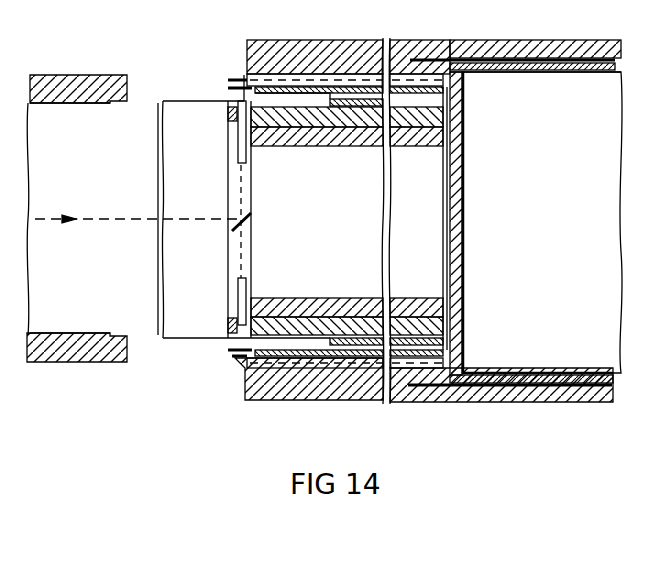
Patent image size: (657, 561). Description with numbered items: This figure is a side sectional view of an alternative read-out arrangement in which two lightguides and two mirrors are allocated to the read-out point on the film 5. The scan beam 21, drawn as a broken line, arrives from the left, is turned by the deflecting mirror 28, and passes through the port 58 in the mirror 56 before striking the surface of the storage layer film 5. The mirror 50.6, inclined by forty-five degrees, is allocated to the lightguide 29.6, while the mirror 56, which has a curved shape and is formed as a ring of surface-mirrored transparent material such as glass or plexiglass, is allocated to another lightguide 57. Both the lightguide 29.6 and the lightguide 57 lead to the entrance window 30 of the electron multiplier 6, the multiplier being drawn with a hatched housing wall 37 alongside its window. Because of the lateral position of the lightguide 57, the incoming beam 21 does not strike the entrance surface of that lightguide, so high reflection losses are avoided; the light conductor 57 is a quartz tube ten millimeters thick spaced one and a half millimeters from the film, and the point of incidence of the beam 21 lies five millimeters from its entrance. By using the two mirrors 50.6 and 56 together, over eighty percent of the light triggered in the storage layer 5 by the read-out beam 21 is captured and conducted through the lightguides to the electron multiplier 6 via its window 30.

The film 5 is at (215, 100).
The electron multiplier 6 is at (478, 270).
The beam 21 is at (100, 219).
The deflecting mirror 28 is at (252, 220).
The lightguide 29.6 is at (290, 78).
The entrance window 30 is at (464, 182).
The hatched wall 37 is at (465, 135).
The mirror 50.6 is at (243, 80).
The mirror 56 is at (228, 116).
The lightguide 57 is at (315, 118).
The port 58 is at (248, 130).